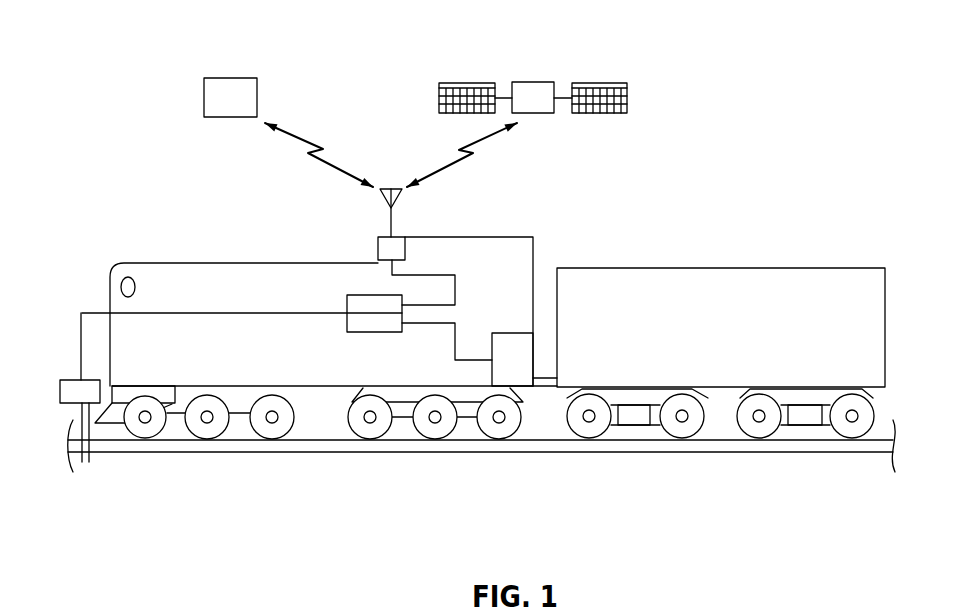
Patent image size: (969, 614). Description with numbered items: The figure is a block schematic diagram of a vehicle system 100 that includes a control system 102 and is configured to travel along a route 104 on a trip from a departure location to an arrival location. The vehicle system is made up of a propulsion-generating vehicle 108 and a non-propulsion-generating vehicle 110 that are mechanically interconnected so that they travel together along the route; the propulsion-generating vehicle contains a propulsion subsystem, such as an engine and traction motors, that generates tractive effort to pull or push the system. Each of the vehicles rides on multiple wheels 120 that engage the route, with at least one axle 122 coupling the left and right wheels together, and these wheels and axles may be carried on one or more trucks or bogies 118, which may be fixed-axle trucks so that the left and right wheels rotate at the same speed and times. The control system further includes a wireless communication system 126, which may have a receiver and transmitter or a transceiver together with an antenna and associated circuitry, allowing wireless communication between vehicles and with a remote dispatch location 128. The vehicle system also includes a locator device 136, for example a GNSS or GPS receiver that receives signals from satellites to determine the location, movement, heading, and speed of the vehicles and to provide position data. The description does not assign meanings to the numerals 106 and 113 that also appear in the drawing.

The vehicle system 100 is at (260, 207).
The control system 102 is at (721, 300).
The route 104 is at (115, 462).
The route / track 106 is at (234, 452).
The propulsion-generating vehicle 108 is at (230, 263).
The non-propulsion-generating vehicle 110 is at (798, 342).
The operator cab 113 is at (523, 373).
The truck or bogie 118 is at (462, 395).
The wheels 120 is at (347, 420).
The axle 122 is at (370, 420).
The wireless communication system 126 is at (378, 245).
The remote location 128 is at (233, 78).
The locator device 136 is at (358, 305).